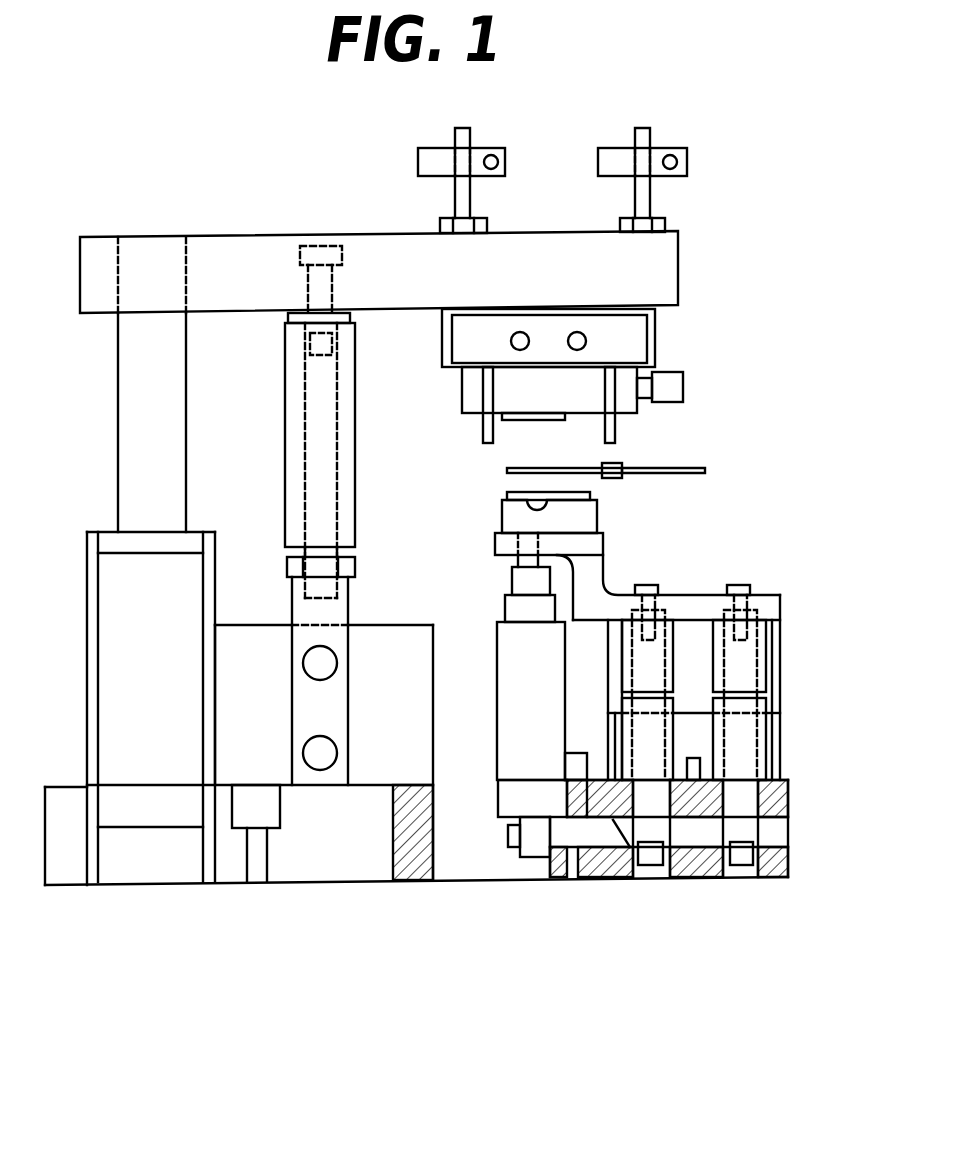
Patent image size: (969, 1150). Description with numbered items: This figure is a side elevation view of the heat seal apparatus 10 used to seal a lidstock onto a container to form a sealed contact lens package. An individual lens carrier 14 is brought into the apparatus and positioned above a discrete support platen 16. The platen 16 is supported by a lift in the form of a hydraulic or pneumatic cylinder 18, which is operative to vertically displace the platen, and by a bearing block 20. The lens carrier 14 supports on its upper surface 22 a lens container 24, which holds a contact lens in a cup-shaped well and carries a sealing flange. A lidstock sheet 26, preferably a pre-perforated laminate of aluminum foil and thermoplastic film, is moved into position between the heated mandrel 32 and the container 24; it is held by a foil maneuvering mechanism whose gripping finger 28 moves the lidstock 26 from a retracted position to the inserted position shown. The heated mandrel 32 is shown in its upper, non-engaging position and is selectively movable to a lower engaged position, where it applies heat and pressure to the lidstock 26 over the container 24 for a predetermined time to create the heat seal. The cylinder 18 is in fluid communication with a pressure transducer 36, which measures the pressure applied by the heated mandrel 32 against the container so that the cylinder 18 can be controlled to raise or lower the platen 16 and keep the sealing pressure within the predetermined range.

The heat seal apparatus 10 is at (709, 155).
The lens carrier 14 is at (507, 517).
The support platen 16 is at (593, 560).
The cylinder 18 is at (507, 753).
The bearing block 20 is at (780, 658).
The upper surface 22 is at (502, 500).
The lens container 24 is at (537, 493).
The lidstock sheet 26 is at (568, 467).
The gripping finger 28 is at (690, 463).
The heated mandrel 32 is at (577, 382).
The pressure transducer 36 is at (575, 767).